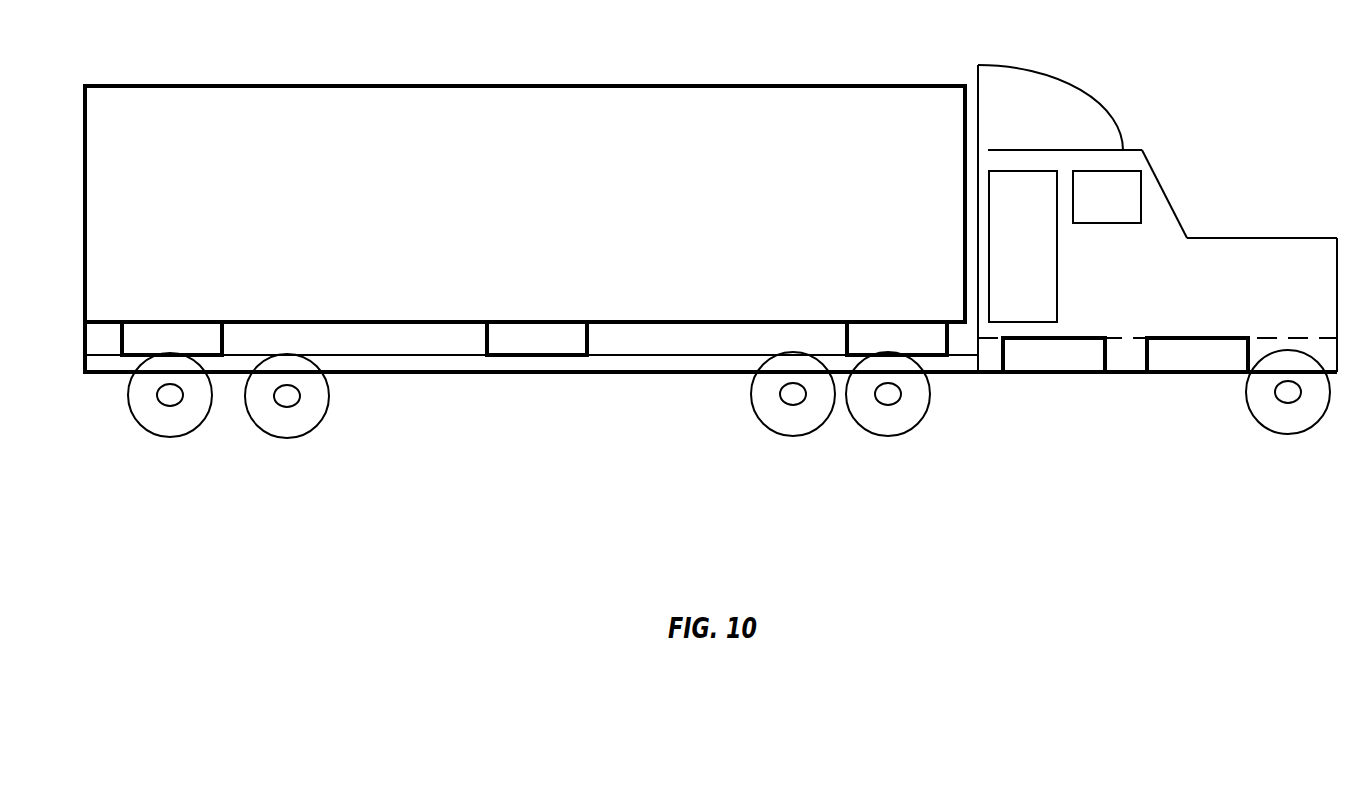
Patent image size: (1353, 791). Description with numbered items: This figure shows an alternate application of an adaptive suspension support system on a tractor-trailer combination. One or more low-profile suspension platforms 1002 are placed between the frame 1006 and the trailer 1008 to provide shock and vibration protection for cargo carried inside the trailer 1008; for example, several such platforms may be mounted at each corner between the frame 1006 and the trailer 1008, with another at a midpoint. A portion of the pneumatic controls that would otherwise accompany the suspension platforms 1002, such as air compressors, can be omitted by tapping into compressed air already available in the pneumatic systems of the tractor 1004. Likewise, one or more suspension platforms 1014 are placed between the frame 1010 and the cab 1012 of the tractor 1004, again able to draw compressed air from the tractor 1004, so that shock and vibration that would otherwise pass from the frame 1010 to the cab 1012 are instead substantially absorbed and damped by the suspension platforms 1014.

The low-profile suspension platforms 1002 is at (187, 333).
The tractor 1004 is at (1147, 160).
The frame 1006 is at (625, 361).
The trailer 1008 is at (745, 85).
The frame 1010 is at (1138, 373).
The cab 1012 is at (1160, 252).
The suspension platforms 1014 is at (1072, 363).